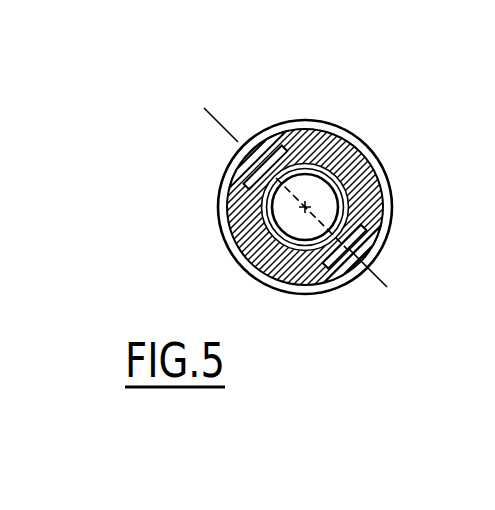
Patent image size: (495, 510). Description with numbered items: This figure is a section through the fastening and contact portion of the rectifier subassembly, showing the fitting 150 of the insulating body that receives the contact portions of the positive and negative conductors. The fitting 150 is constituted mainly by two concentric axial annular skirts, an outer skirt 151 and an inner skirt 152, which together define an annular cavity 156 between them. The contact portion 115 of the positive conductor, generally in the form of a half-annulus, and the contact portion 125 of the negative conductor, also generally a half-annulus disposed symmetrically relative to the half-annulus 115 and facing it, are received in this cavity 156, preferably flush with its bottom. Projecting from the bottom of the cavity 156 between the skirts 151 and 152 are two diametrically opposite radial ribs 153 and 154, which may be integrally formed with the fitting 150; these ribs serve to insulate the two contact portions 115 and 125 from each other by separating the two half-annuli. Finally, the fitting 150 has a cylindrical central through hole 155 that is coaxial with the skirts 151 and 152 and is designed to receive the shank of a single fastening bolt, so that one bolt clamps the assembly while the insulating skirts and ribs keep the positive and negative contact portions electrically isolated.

The contact portion 115 is at (313, 128).
The contact portion 125 is at (283, 262).
The fitting 150 is at (247, 202).
The outer skirt 151 is at (276, 187).
The inner skirt 152 is at (296, 163).
The radial rib 153 is at (254, 164).
The radial rib 154 is at (352, 256).
The cylindrical central through hole 155 is at (281, 211).
The annular cavity 156 is at (358, 138).